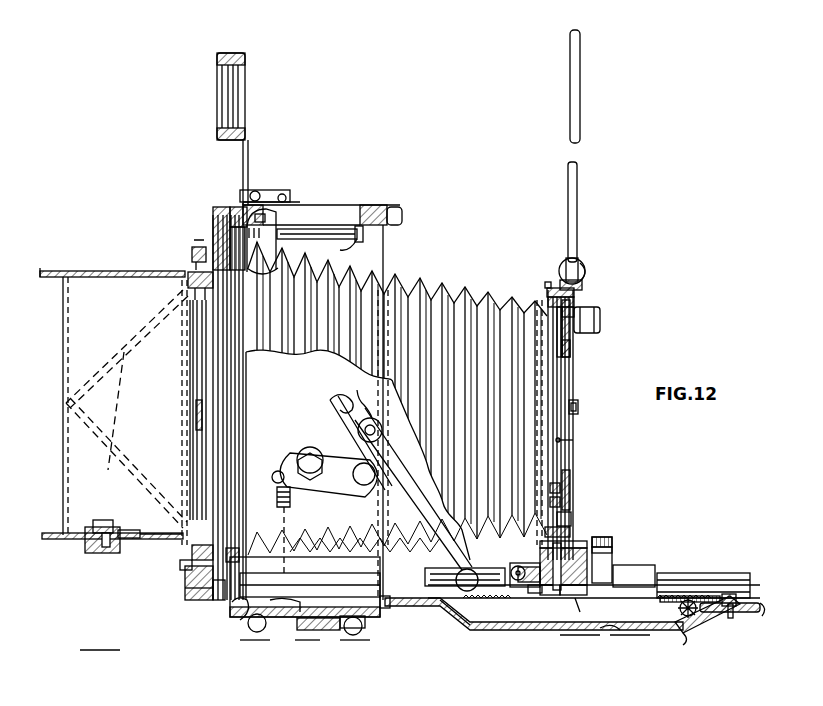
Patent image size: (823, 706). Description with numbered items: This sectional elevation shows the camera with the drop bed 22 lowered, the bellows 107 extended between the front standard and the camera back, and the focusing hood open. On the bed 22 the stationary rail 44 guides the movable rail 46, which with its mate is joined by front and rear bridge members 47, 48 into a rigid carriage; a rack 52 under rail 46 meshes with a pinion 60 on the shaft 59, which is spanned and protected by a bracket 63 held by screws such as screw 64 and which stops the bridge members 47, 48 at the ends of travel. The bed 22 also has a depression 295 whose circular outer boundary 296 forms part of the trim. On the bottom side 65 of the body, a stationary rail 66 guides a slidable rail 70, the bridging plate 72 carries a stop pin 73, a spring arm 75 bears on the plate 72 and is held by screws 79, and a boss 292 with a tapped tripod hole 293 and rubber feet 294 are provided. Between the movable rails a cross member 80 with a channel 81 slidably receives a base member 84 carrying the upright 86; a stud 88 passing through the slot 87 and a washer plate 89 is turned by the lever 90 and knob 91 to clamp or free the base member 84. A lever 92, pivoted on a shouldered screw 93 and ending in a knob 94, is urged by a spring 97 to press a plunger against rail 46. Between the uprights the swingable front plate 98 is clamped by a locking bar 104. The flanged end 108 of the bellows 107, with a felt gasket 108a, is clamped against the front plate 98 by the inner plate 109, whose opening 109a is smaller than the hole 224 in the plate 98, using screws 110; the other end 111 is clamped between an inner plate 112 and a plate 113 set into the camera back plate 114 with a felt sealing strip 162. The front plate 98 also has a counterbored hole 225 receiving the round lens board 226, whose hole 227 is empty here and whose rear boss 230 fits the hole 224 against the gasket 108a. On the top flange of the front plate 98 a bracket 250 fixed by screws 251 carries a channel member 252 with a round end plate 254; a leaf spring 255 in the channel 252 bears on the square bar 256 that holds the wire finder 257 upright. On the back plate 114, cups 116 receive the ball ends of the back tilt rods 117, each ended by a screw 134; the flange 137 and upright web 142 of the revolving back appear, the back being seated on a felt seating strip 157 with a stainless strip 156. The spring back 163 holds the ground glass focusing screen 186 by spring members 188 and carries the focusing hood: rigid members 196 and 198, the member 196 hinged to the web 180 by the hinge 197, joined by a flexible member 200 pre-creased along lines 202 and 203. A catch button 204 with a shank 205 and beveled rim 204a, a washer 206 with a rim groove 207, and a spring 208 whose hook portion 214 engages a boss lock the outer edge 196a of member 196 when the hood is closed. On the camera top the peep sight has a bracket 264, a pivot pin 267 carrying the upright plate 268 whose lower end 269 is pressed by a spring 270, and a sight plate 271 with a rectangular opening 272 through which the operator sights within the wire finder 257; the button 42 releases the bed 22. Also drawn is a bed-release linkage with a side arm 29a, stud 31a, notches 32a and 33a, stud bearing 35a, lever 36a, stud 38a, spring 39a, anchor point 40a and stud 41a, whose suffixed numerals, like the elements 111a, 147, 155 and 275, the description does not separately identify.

The base rail 22 is at (410, 606).
The lever 29a is at (360, 393).
The pivot 31a is at (383, 430).
The link 32a is at (355, 443).
The hook 33a is at (340, 400).
The nut 35a is at (310, 453).
The link 36a is at (325, 490).
The roller 38a is at (364, 486).
The spring 39a is at (277, 497).
The pin 40a is at (275, 473).
The spring 41a is at (365, 537).
The top bar 42 is at (400, 212).
The rail end 44 is at (762, 612).
The rail 46 is at (757, 603).
The block 47 is at (732, 594).
The slide 48 is at (428, 592).
The plate 52 is at (468, 630).
The gear 59 is at (692, 618).
The rail 60 is at (700, 625).
The box 63 is at (690, 573).
The pin 64 is at (730, 618).
The housing 65 is at (280, 617).
The block 66 is at (386, 608).
The arm 70 is at (430, 535).
The block 72 is at (315, 630).
The bracket 73 is at (244, 610).
The block 75 is at (350, 628).
The roller 79 is at (362, 628).
The block 80 is at (578, 595).
The block 81 is at (550, 595).
The cylinder 84 is at (612, 565).
The bar 86 is at (570, 476).
The roller housing 87 is at (516, 565).
The pin 88 is at (558, 590).
The block 89 is at (540, 555).
The bracket 90 is at (587, 544).
The ring 91 is at (612, 550).
The link 92 is at (580, 600).
The block 93 is at (534, 594).
The box 94 is at (630, 578).
The roller 97 is at (515, 582).
The block 98 is at (545, 532).
The pin 104 is at (577, 414).
The bellows 107 is at (418, 278).
The block 108 is at (574, 307).
The knob 108a is at (600, 320).
The plate 109 is at (548, 302).
The strip 109a is at (572, 345).
The block 110 is at (560, 506).
The lines 111 is at (260, 237).
The block 111a is at (226, 555).
The bracket 112 is at (278, 262).
The front standard 113 is at (213, 235).
The block 114 is at (232, 210).
The base 116 is at (100, 677).
The pin 117 is at (361, 254).
The rod 134 is at (363, 236).
The base 137 is at (262, 673).
The base 142 is at (357, 673).
The base 147 is at (312, 673).
The base 155 is at (632, 670).
The base 156 is at (584, 670).
The column 157 is at (228, 215).
The block 162 is at (217, 602).
The block 163 is at (189, 557).
The block 180 is at (192, 252).
The rails 186 is at (197, 352).
The block 188 is at (196, 412).
The top plate 196 is at (118, 270).
The flange 196a is at (40, 270).
The block 197 is at (188, 285).
The block 198 is at (190, 566).
The panel 200 is at (64, 460).
The diagonal 202 is at (127, 349).
The diagonal 203 is at (137, 411).
The block 204 is at (106, 556).
The slot 204a is at (112, 550).
The block 205 is at (130, 530).
The bump 206 is at (98, 520).
The bottom plate 207 is at (66, 539).
The diagonal 208 is at (138, 530).
The rail 214 is at (140, 530).
The block 224 is at (560, 512).
The block 225 is at (573, 528).
The rear standard 226 is at (573, 386).
The block 227 is at (578, 404).
The pin 230 is at (574, 440).
The block 250 is at (582, 285).
The bracket 251 is at (548, 285).
The plate 252 is at (574, 290).
The ball 254 is at (580, 260).
The slot 255 is at (566, 262).
The socket 256 is at (585, 268).
The rod 257 is at (577, 184).
The plate 264 is at (290, 194).
The screw 267 is at (262, 196).
The rod 268 is at (248, 168).
The block 269 is at (263, 220).
The screw 270 is at (290, 198).
The handle 271 is at (245, 52).
The grip 272 is at (247, 95).
The rack 275 is at (672, 596).
The bracket 292 is at (290, 612).
The shaft 293 is at (305, 585).
The roller 294 is at (257, 632).
The link 295 is at (612, 632).
The end 296 is at (683, 645).